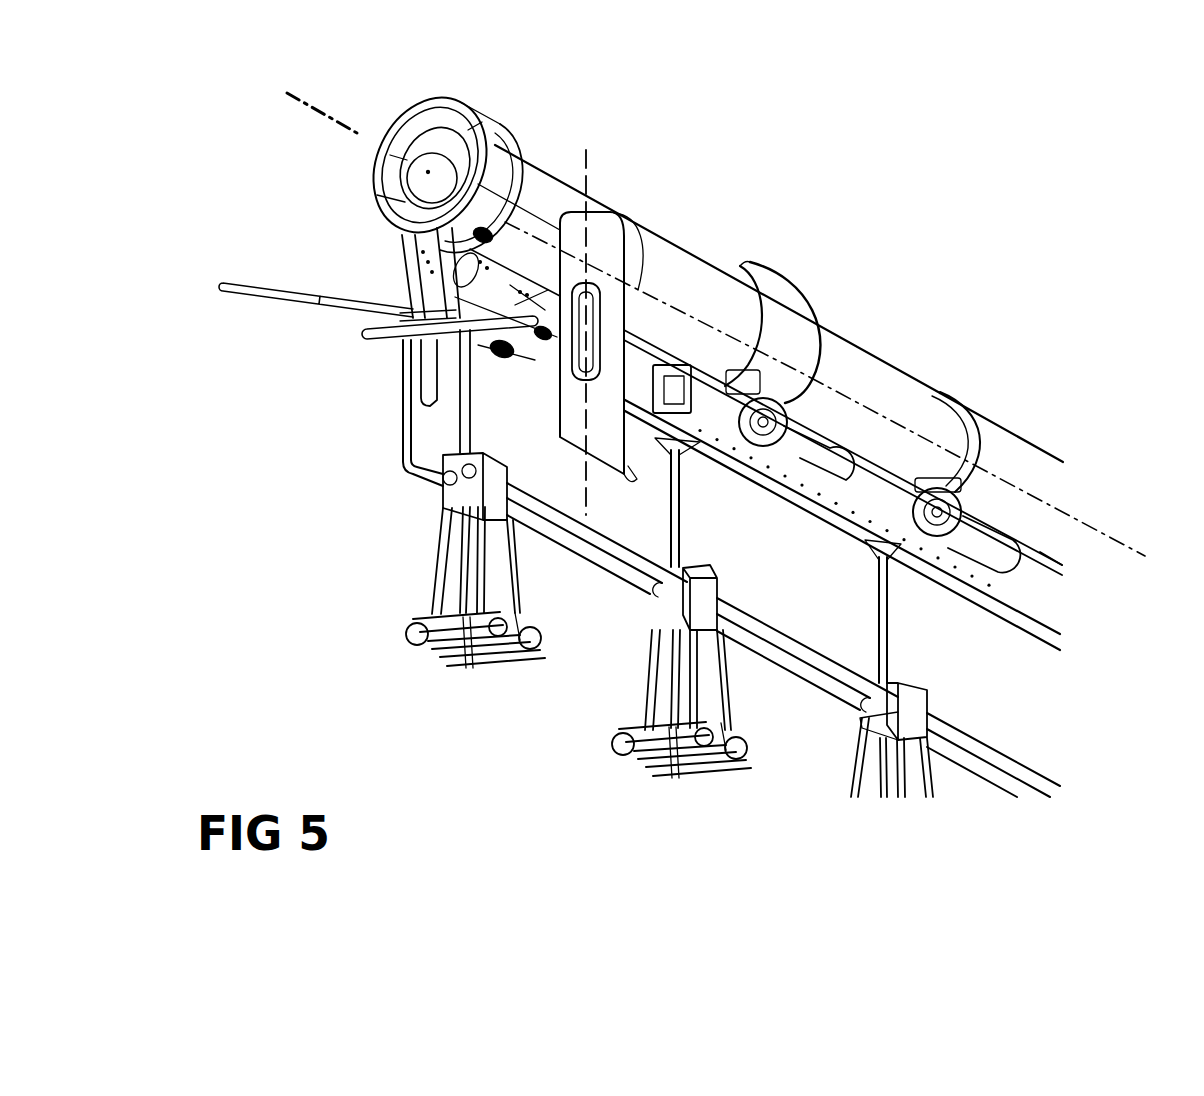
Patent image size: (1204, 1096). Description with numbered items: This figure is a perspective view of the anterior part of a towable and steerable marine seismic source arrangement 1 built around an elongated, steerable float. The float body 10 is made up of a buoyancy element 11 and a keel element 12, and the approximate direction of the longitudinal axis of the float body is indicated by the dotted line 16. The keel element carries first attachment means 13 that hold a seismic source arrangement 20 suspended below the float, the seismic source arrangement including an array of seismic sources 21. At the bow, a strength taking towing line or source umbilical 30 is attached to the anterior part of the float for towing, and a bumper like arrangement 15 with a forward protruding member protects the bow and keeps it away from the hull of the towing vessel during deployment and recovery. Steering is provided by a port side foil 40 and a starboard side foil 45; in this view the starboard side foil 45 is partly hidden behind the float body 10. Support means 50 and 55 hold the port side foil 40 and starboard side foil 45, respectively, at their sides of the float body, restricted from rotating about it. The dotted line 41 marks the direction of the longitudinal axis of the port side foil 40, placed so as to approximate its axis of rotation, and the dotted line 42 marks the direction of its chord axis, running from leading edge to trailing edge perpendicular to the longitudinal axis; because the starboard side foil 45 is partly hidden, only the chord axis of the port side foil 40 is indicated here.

The transport apparatus 1 is at (942, 184).
The float body 10 is at (897, 373).
The buoyancy element 11 is at (997, 463).
The keel element 12 is at (1033, 587).
The first attachment means 13 is at (680, 447).
The bumper like arrangement 15 is at (407, 273).
The longitudinal axis of the float body 16 is at (716, 309).
The seismic source arrangement 20 is at (647, 597).
The seismic source 21 is at (437, 660).
The strength taking towing line or source umbilical 30 is at (250, 300).
The port side foil 40 is at (607, 332).
The longitudinal axis of the port side foil 41 is at (610, 327).
The chord axis of the port side foil 42 is at (660, 489).
The starboard side foil 45 is at (427, 413).
The support means for the port side foil 50 is at (523, 345).
The support means for the starboard side foil 55 is at (407, 343).